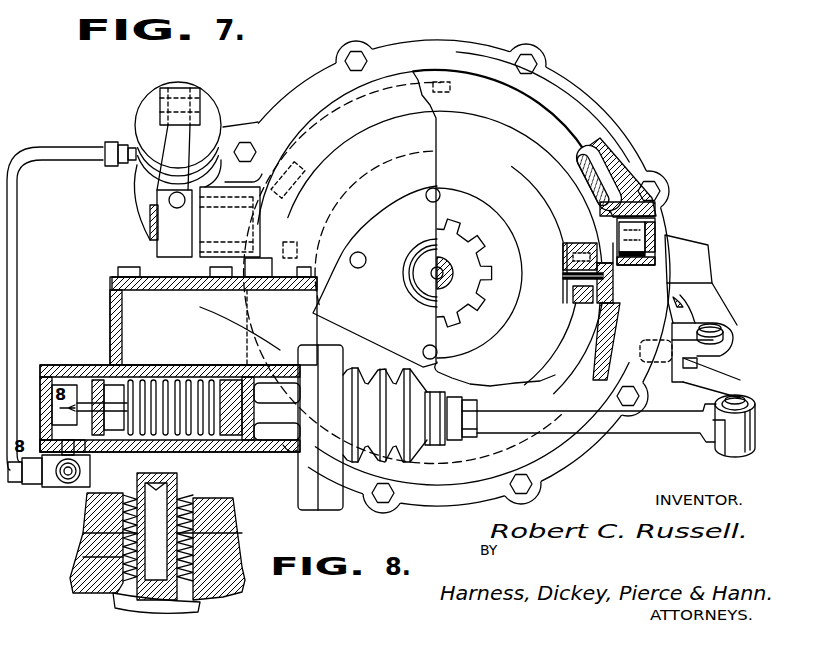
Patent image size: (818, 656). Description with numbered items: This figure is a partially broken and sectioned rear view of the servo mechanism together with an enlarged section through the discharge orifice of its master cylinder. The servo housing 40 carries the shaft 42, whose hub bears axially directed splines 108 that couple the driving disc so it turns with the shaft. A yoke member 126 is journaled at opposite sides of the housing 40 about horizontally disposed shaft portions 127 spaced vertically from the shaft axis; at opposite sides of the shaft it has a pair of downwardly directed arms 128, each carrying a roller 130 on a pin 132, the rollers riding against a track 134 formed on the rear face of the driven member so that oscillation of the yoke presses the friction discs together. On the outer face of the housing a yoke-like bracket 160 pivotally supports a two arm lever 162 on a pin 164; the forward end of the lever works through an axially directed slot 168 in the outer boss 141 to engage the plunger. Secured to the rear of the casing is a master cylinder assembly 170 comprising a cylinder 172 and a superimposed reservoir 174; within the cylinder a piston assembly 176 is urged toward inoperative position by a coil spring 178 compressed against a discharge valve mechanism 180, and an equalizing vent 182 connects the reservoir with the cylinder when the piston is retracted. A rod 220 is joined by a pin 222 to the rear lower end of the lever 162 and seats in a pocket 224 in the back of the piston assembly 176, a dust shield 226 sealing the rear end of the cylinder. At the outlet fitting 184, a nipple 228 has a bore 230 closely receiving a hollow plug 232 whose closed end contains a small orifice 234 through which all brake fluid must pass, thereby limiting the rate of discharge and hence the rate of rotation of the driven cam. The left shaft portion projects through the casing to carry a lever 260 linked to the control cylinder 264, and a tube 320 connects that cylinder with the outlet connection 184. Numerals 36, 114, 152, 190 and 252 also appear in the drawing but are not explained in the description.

In FIG. 7, the housing 36 is at (578, 86).
In FIG. 7, the housing 40 is at (613, 120).
In FIG. 7, the shaft 42 is at (443, 245).
In FIG. 7, the splines 108 is at (498, 232).
In FIG. 7, the slot 114 is at (596, 182).
In FIG. 7, the yoke member 126 is at (423, 272).
In FIG. 7, the shaft portions 127 is at (640, 230).
In FIG. 7, the arms 128 is at (564, 249).
In FIG. 7, the roller 130 is at (318, 222).
In FIG. 7, the pin 132 is at (573, 287).
In FIG. 7, the track 134 is at (553, 355).
In FIG. 7, the outer boss 141 is at (690, 242).
In FIG. 7, the spacer 152 is at (564, 269).
In FIG. 7, the yoke-like bracket 160 is at (690, 323).
In FIG. 7, the two arm lever 162 is at (725, 370).
In FIG. 7, the pin 164 is at (713, 325).
In FIG. 7, the slot 168 is at (692, 277).
In FIG. 7, the master cylinder assembly 170 is at (108, 295).
In FIG. 7, the cylinder 172 is at (167, 440).
In FIG. 8, the cylinder 172 is at (88, 517).
In FIG. 7, the reservoir 174 is at (215, 328).
In FIG. 7, the piston assembly 176 is at (207, 447).
In FIG. 7, the coil spring 178 is at (163, 350).
In FIG. 7, the discharge valve mechanism 180 is at (98, 365).
In FIG. 7, the equalizing vent 182 is at (200, 370).
In FIG. 7, the fitting 184 is at (87, 455).
In FIG. 8, the fitting 184 is at (190, 603).
In FIG. 7, the valve 190 is at (63, 495).
In FIG. 7, the rod 220 is at (617, 432).
In FIG. 7, the pin 222 is at (720, 405).
In FIG. 7, the pocket 224 is at (297, 450).
In FIG. 7, the dust shield 226 is at (395, 368).
In FIG. 8, the nipple 228 is at (240, 533).
In FIG. 8, the bore 230 is at (123, 557).
In FIG. 8, the hollow plug 232 is at (123, 535).
In FIG. 8, the orifice 234 is at (177, 480).
In FIG. 7, the vent 252 is at (52, 410).
In FIG. 7, the lever 260 is at (170, 172).
In FIG. 7, the cylinder 264 is at (135, 125).
In FIG. 7, the tube 320 is at (18, 262).